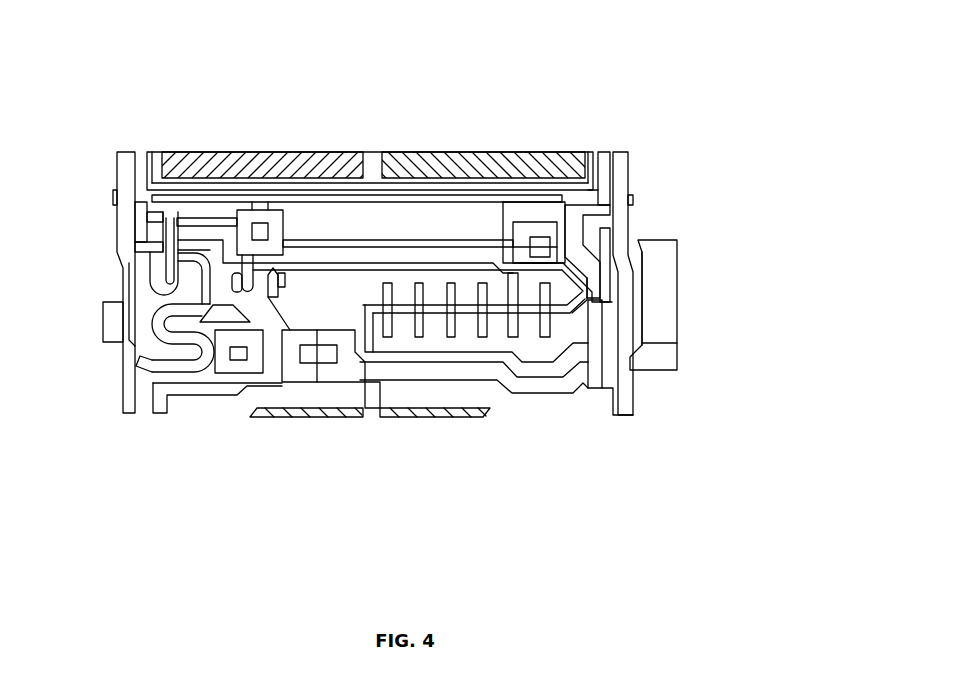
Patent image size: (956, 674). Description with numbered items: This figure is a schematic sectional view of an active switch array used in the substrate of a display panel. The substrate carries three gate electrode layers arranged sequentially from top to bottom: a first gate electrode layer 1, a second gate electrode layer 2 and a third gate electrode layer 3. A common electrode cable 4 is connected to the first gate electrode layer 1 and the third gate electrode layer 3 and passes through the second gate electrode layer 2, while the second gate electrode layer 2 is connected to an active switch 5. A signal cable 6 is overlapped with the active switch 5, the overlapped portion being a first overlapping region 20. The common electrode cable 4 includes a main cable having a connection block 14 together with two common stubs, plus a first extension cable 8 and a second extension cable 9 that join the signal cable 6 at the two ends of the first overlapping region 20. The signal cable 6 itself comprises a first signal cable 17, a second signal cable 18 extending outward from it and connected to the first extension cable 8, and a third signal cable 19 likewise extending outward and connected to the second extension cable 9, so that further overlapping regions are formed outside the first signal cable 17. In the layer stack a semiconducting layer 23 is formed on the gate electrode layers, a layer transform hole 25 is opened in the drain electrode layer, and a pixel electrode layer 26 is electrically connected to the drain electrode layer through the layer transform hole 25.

The first gate electrode layer 1 is at (140, 195).
The second gate electrode layer 2 is at (340, 300).
The third gate electrode layer 3 is at (373, 387).
The common electrode cable 4 is at (531, 390).
The active switch 5 is at (662, 342).
The signal cable 6 is at (615, 75).
The first extension cable 8 is at (588, 223).
The second extension cable 9 is at (583, 390).
The connection block 14 is at (522, 232).
The first signal cable 17 is at (633, 262).
The second signal cable 18 is at (604, 212).
The third signal cable 19 is at (648, 288).
The first overlapping region 20 is at (640, 313).
The semiconducting layer 23 is at (172, 288).
The layer transform hole 25 is at (317, 352).
The pixel electrode layer 26 is at (291, 150).